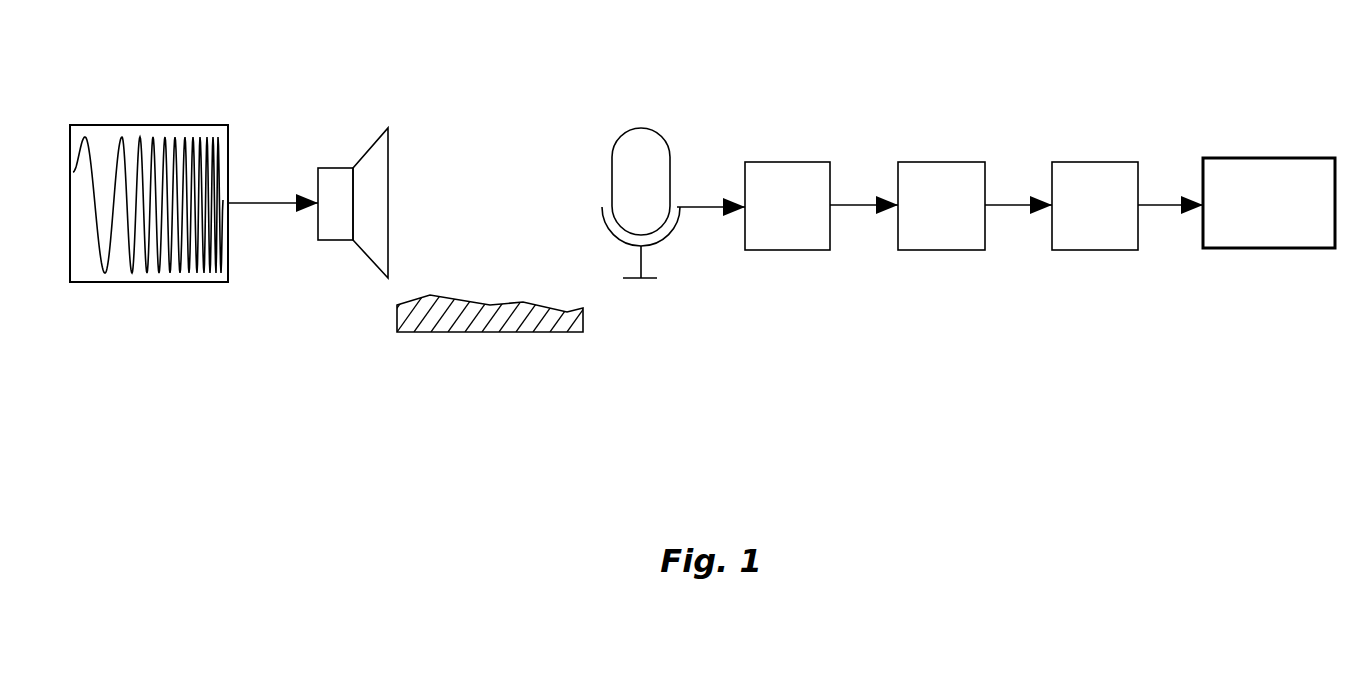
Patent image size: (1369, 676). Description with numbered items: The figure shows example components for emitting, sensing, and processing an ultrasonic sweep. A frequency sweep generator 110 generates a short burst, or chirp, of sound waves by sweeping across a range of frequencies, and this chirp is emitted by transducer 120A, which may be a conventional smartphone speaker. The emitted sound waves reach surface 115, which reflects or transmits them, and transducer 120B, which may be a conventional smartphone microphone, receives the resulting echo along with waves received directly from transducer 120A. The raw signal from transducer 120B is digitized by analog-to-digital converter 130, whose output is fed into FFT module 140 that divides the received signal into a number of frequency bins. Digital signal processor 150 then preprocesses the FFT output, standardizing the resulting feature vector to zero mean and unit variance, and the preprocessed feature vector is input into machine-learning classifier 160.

The frequency sweep generator 110 is at (142, 123).
The transducer 120A is at (358, 137).
The surface 115 is at (472, 333).
The transducer 120B is at (639, 125).
The analog-to-digital converter 130 is at (785, 158).
The FFT module 140 is at (940, 158).
The digital signal processor 150 is at (1088, 158).
The machine-learning classifier 160 is at (1268, 157).